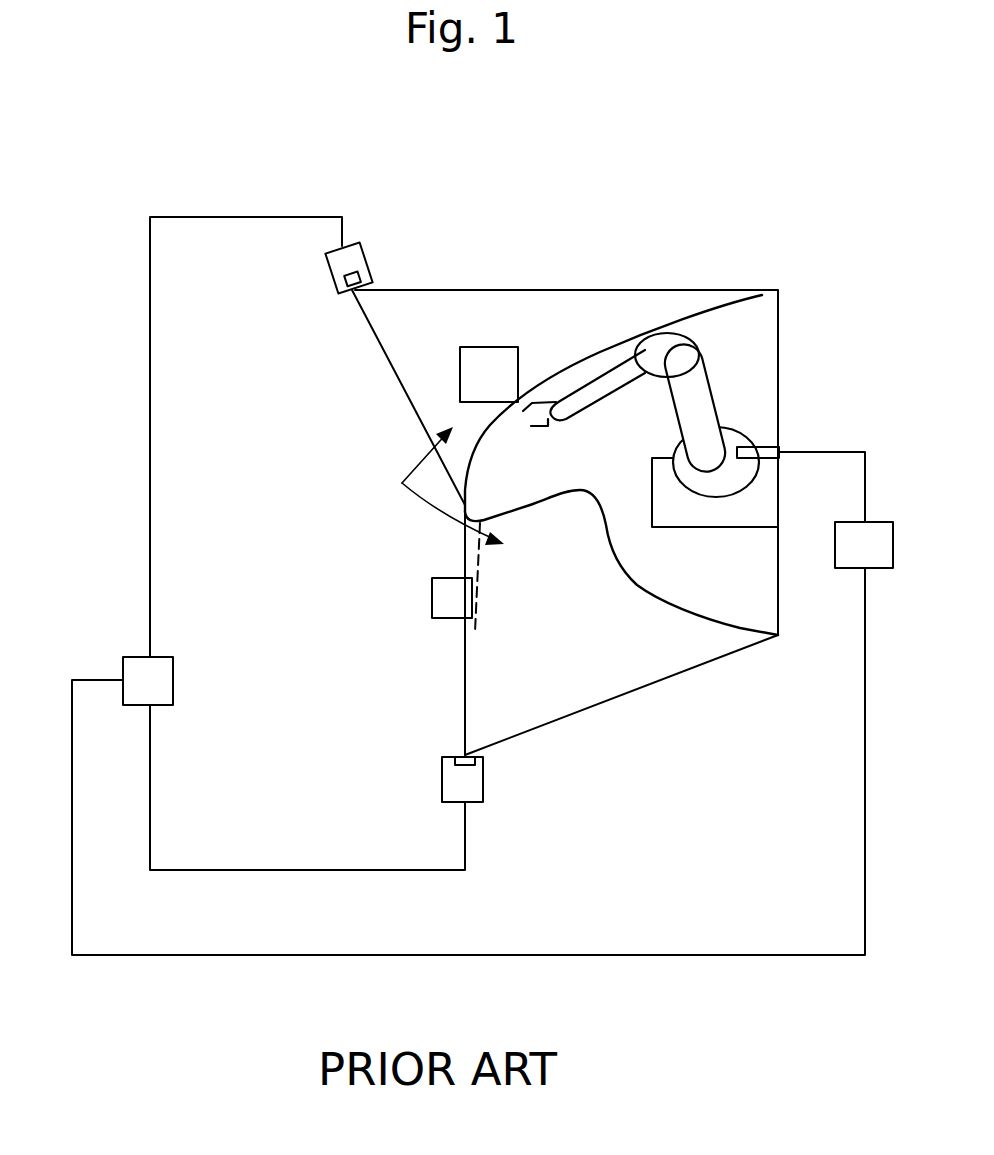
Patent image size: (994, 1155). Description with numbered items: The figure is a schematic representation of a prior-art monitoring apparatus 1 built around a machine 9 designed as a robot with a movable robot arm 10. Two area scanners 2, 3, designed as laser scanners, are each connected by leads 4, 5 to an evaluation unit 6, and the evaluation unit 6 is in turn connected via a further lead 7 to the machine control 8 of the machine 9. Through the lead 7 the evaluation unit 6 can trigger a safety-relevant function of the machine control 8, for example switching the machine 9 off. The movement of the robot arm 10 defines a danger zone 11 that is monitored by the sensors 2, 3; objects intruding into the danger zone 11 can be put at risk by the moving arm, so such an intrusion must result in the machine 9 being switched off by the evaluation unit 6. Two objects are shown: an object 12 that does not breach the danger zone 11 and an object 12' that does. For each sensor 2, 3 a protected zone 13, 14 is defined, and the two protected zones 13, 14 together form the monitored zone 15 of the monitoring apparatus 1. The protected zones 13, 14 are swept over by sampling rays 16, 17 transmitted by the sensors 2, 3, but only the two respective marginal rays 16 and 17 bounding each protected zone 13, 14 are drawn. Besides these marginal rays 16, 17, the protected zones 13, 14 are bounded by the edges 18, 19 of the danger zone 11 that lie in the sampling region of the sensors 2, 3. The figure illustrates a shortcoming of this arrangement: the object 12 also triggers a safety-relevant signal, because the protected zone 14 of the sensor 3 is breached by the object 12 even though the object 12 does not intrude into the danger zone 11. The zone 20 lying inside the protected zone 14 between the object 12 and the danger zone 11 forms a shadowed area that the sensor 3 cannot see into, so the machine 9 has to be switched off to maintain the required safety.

The monitoring apparatus 1 is at (528, 222).
The area scanner 2 is at (360, 264).
The area scanner 3 is at (480, 780).
The lead 4 is at (151, 400).
The lead 5 is at (280, 870).
The evaluation unit 6 is at (160, 680).
The further lead 7 is at (553, 955).
The machine control 8 is at (875, 562).
The machine 9 is at (752, 518).
The robot arm 10 is at (622, 370).
The danger zone 11 is at (722, 602).
The object 12 is at (420, 598).
The object 12' is at (500, 351).
The protected zone 13 is at (447, 336).
The protected zone 14 is at (568, 669).
The monitored zone 15 is at (434, 486).
The sampling rays 16 is at (463, 288).
The sampling rays 17 is at (465, 675).
The edge of the danger zone 18 is at (580, 340).
The edge of the danger zone 19 is at (662, 600).
The zone 20 is at (472, 552).